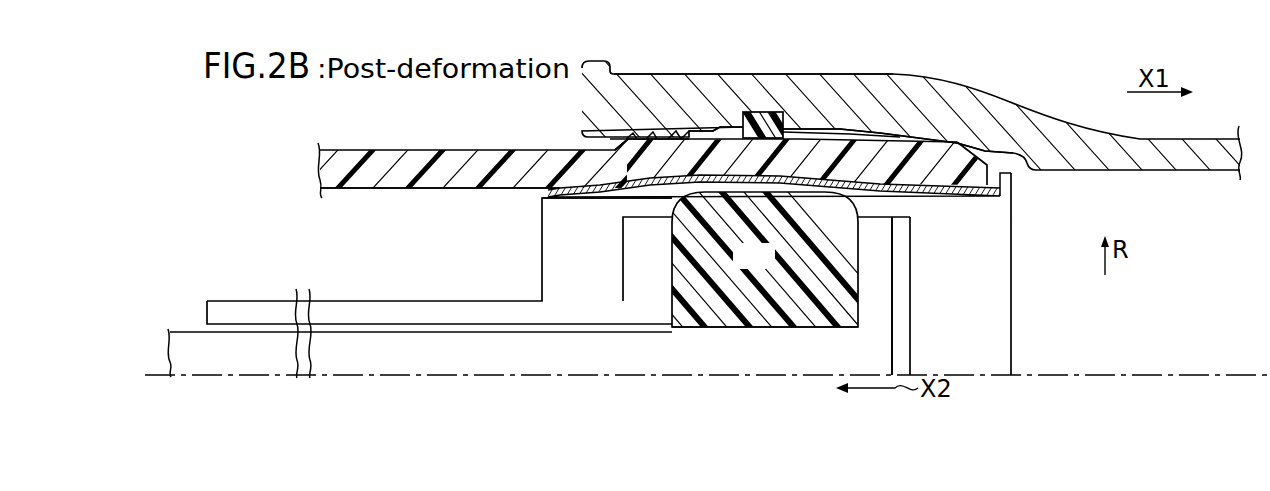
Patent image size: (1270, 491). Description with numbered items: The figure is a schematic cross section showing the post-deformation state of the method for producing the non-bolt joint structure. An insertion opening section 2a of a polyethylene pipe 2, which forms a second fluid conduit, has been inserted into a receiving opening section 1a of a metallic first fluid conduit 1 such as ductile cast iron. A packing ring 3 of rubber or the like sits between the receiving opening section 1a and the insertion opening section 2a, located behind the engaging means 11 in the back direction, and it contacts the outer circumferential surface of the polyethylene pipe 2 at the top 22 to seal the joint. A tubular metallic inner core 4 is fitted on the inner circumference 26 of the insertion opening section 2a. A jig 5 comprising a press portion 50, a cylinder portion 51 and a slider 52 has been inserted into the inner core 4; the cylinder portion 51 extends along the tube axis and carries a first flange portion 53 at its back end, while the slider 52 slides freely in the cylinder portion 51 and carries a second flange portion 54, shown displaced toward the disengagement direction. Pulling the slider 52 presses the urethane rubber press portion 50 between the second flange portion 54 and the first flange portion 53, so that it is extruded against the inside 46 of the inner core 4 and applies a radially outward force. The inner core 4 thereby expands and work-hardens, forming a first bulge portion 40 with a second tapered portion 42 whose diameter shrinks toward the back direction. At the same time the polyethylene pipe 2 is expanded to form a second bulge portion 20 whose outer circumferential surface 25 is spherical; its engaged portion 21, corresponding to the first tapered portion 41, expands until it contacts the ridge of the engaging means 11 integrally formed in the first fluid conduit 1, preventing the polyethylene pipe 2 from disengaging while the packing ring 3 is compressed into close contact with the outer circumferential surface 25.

The first fluid conduit 1 is at (973, 90).
The receiving opening section 1a is at (703, 74).
The polyethylene pipe 2 is at (417, 150).
The insertion opening section 2a is at (893, 160).
The packing ring 3 is at (770, 114).
The inner core 4 is at (980, 198).
The jig 5 is at (915, 329).
The engaging means 11 is at (645, 139).
The second bulge portion 20 is at (796, 158).
The engaged portion 21 is at (603, 162).
The top 22 is at (750, 165).
The outer circumferential surface 25 is at (729, 129).
The inner circumference 26 is at (523, 191).
The first bulge portion 40 is at (813, 158).
The first tapered portion 41 is at (660, 135).
The second tapered portion 42 is at (860, 160).
The inside 46 is at (663, 198).
The press portion 50 is at (736, 326).
The cylinder portion 51 is at (410, 302).
The slider 52 is at (393, 364).
The first flange portion 53 is at (638, 268).
The second flange portion 54 is at (910, 262).